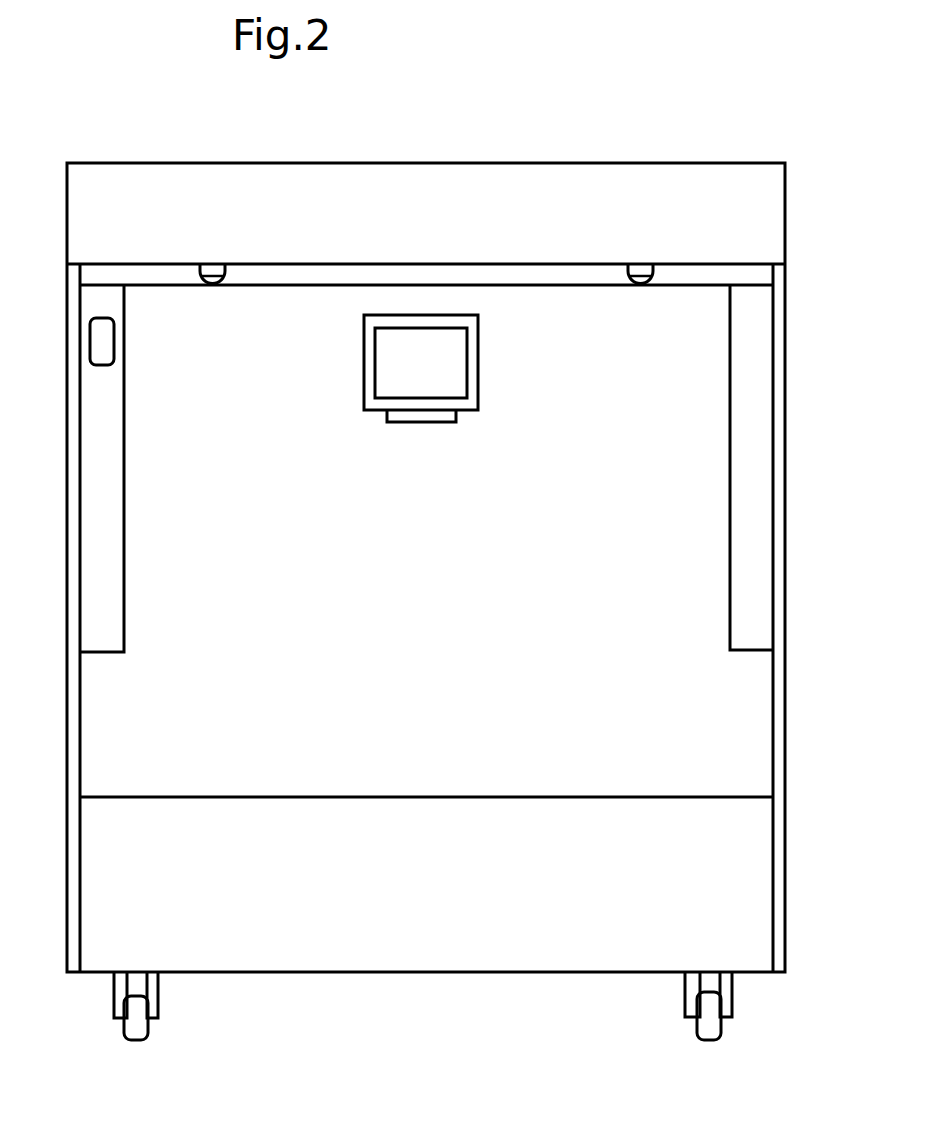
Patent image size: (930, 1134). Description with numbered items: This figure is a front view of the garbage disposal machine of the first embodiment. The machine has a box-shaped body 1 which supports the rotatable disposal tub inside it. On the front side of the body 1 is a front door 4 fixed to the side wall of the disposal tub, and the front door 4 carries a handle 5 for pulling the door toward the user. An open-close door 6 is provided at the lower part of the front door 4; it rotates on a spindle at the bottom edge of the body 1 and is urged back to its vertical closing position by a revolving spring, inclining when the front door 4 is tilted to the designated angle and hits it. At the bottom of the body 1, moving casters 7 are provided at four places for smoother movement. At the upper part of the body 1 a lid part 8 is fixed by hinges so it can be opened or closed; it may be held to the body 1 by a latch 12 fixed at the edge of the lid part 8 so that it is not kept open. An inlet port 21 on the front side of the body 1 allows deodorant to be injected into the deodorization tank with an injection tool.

The body 1 is at (786, 382).
The front door 4 is at (137, 717).
The handle 5 is at (364, 352).
The open-close door 6 is at (135, 852).
The moving casters 7 is at (142, 1005).
The lid part 8 is at (223, 188).
The latch 12 is at (214, 268).
The inlet port 21 is at (101, 342).